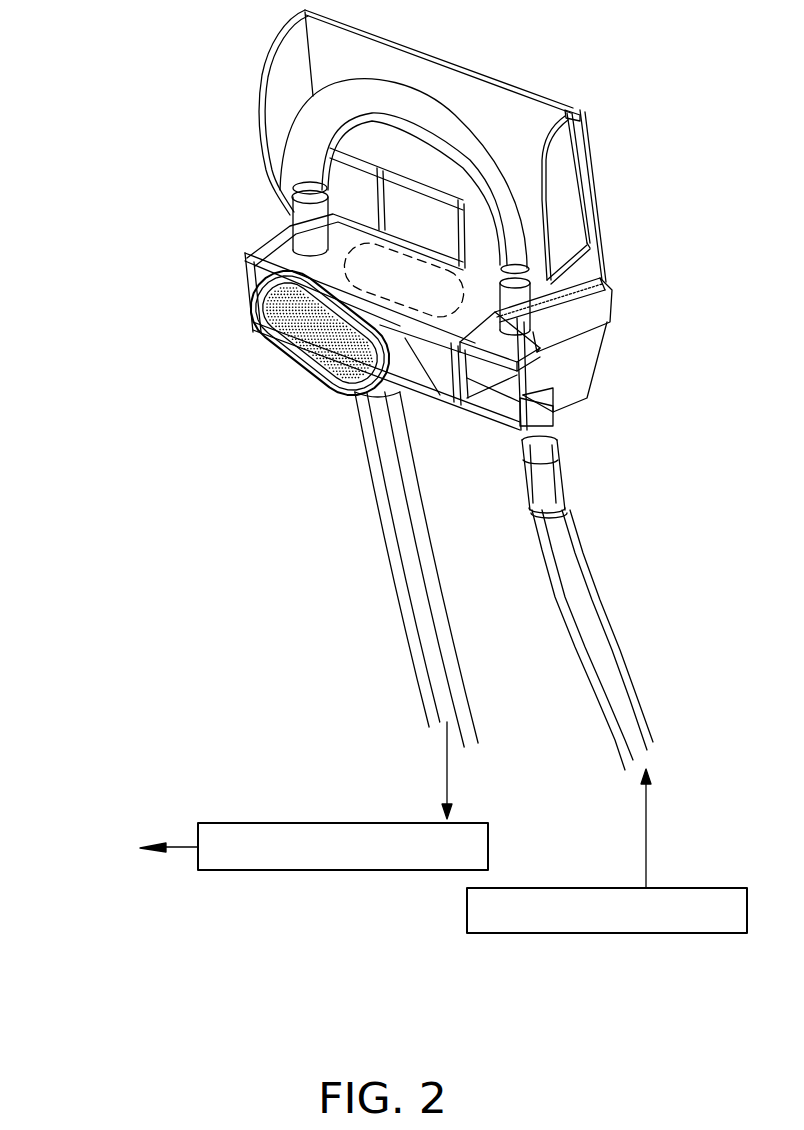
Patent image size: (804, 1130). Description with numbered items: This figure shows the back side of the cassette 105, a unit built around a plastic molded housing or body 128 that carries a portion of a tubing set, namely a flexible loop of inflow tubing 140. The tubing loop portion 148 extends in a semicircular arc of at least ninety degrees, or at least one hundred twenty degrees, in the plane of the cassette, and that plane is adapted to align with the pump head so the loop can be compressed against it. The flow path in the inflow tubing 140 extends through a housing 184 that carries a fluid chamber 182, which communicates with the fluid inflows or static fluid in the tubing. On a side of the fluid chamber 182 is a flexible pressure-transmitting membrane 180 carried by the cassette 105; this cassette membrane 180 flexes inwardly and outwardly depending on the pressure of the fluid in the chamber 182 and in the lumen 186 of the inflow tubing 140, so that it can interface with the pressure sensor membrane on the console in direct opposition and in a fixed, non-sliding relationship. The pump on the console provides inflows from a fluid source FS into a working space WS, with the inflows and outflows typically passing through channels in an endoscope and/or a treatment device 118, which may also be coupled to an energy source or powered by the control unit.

The cassette 105 is at (593, 199).
The tubing loop portion 148 is at (457, 118).
The housing 184 is at (255, 270).
The plastic molded housing or body 128 is at (590, 305).
The fluid chamber 182 is at (400, 252).
The flexible pressure-transmitting membrane 180 is at (290, 362).
The lumen 186 is at (380, 492).
The inflow tubing 140 is at (592, 595).
The treatment device 118 is at (343, 846).
The working space WS is at (135, 848).
The fluid source FS is at (607, 910).